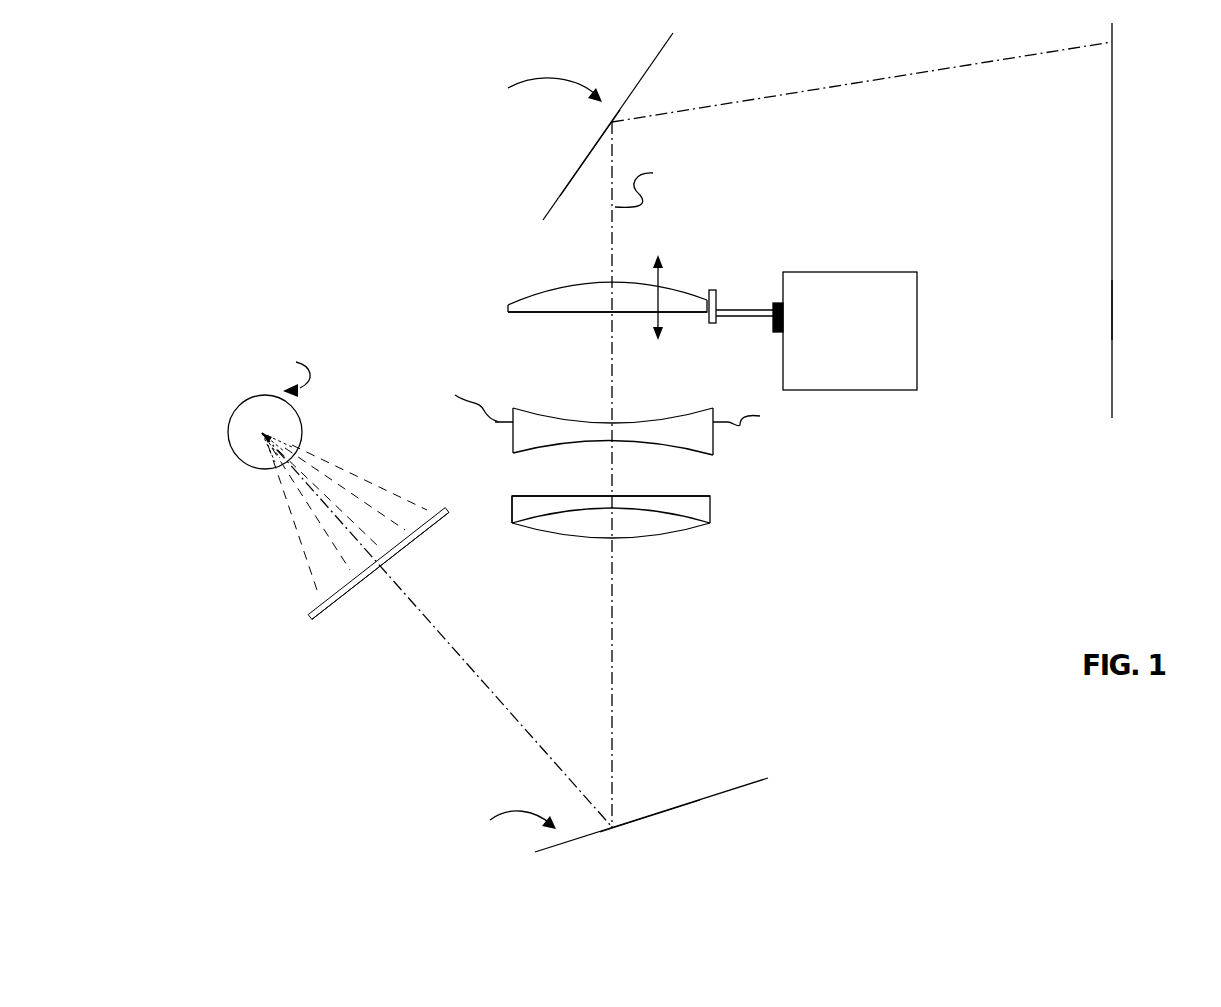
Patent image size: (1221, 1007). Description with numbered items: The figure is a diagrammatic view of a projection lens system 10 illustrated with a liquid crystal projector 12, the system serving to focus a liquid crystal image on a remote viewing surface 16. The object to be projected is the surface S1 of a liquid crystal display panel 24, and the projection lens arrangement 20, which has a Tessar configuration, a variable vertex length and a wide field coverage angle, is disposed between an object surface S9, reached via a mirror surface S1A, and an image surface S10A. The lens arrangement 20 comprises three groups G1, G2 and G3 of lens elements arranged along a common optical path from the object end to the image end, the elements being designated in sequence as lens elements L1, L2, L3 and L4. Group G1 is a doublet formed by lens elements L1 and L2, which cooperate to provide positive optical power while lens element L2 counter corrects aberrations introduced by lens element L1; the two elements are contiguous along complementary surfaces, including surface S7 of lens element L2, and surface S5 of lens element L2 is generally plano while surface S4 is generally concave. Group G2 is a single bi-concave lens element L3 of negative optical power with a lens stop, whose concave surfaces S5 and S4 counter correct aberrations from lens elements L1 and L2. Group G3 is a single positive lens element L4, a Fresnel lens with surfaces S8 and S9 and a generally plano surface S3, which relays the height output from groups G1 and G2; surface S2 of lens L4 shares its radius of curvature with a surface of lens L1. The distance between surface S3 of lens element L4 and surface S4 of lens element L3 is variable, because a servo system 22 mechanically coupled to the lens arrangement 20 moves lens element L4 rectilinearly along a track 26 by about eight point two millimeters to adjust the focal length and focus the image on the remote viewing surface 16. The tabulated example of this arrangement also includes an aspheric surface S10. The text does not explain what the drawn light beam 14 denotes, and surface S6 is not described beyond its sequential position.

The projection lens system 10 is at (756, 626).
The liquid crystal projector 12 is at (277, 668).
The light beam 14 is at (433, 535).
The remote viewing surface 16 is at (1112, 143).
The projection lens arrangement 20 is at (565, 597).
The servo system 22 is at (888, 272).
The liquid crystal display panel 24 is at (311, 616).
The track 26 is at (707, 303).
The first lens group G1 is at (851, 485).
The second lens group G2 is at (816, 402).
The third lens group G3 is at (378, 263).
The lens element L1 is at (578, 527).
The lens element L2 is at (712, 522).
The lens element L3 is at (700, 445).
The lens element L4 is at (542, 301).
The surface S1 is at (341, 603).
The mirror surface S1A is at (668, 808).
The surface S2 is at (648, 540).
The surface S3 is at (545, 520).
The surface S4 is at (692, 532).
The surface S5 is at (512, 496).
The lens surface S6 is at (590, 452).
The surface S7 is at (550, 419).
The surface S8 is at (578, 312).
The object surface S9 is at (578, 283).
The aspheric surface S10 is at (1112, 315).
The image surface S10A is at (550, 205).